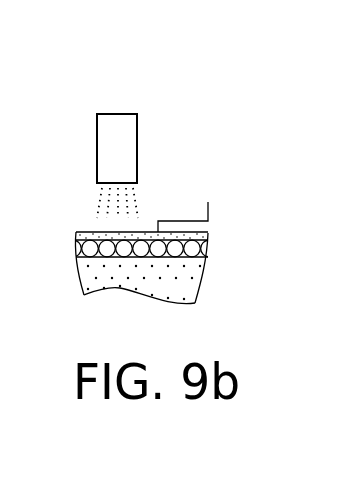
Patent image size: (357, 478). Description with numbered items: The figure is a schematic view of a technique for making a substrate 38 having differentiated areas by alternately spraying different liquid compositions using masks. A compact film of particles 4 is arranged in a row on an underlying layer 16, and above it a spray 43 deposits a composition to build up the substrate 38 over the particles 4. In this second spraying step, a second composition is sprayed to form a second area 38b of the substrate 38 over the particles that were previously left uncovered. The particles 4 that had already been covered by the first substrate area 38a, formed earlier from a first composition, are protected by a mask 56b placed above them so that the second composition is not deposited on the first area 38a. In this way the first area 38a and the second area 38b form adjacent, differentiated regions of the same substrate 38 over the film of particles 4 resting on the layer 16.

The spray 43 is at (123, 132).
The substrate 38 is at (145, 226).
The mask 56b is at (189, 214).
The first area 38a is at (207, 240).
The second area 38b is at (76, 231).
The particles 4 is at (183, 252).
The substrate 16 is at (151, 285).